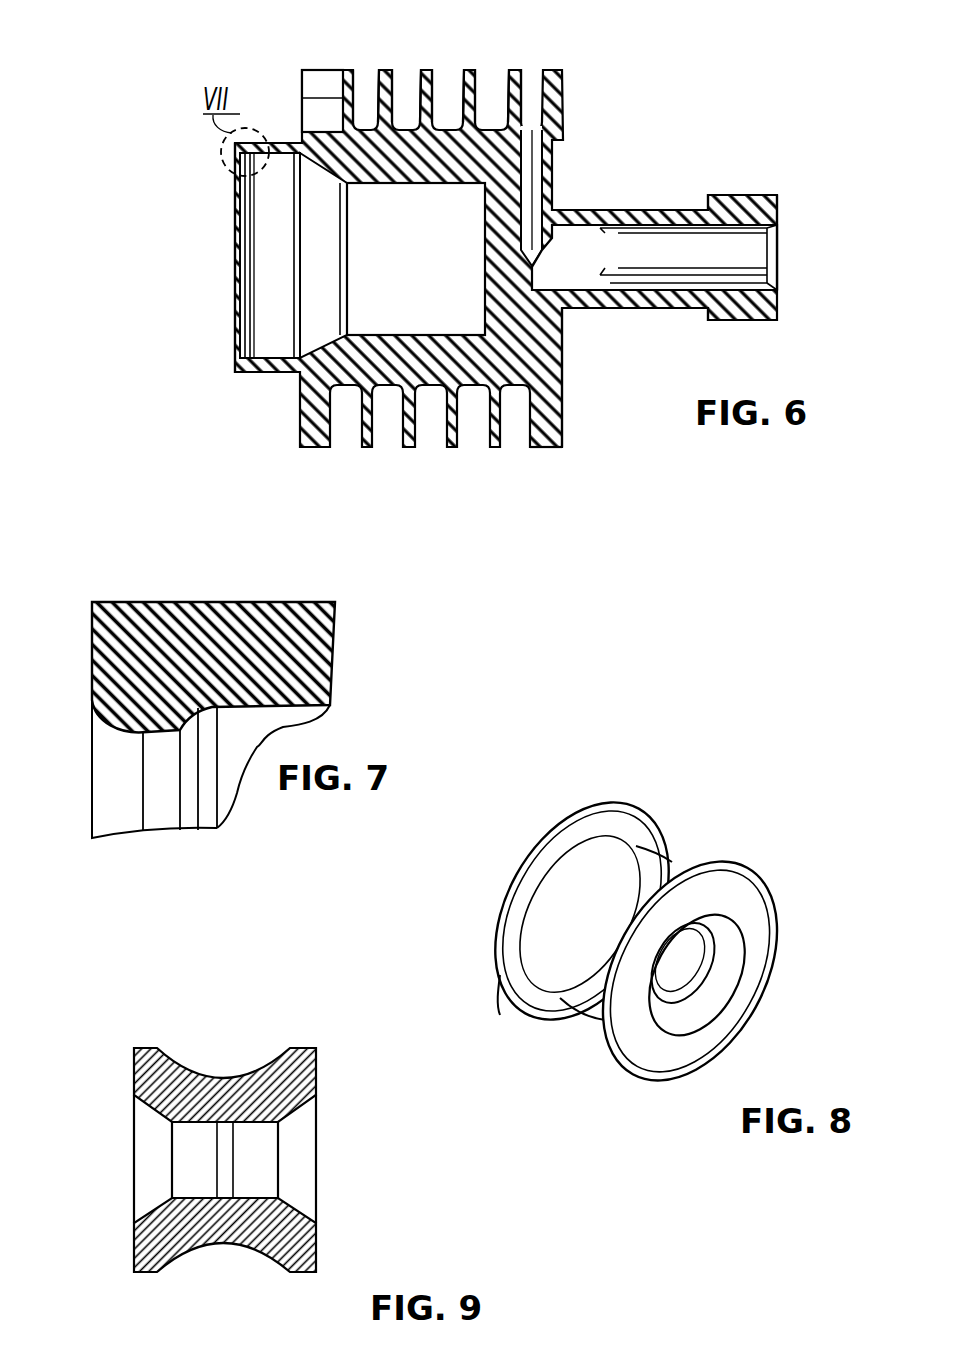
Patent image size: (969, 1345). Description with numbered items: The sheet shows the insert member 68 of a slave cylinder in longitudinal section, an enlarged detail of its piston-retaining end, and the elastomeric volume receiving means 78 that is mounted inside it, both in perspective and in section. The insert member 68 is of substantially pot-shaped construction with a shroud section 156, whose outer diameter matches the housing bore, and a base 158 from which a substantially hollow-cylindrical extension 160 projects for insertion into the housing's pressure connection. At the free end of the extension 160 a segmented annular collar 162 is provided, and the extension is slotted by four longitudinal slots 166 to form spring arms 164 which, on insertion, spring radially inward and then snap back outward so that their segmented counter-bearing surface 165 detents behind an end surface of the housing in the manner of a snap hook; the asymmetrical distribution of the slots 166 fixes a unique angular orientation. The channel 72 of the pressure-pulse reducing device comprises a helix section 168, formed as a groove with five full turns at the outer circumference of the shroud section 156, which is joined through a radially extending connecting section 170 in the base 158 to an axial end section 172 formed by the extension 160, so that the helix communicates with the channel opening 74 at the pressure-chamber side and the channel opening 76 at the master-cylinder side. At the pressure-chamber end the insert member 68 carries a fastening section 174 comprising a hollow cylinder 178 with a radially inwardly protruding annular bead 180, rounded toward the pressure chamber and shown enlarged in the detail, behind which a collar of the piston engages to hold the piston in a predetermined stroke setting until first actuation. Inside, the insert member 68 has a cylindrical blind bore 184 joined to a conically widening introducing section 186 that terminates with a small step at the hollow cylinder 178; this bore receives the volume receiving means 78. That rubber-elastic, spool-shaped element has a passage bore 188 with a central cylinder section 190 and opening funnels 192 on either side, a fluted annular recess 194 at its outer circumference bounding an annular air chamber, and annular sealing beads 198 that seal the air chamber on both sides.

In FIG. 6, the insert member 68 is at (599, 163).
In FIG. 6, the channel 72 is at (412, 98).
In FIG. 6, the channel opening 74 is at (305, 100).
In FIG. 6, the channel opening 76 is at (818, 213).
In FIG. 8, the volume receiving means 78 is at (641, 939).
In FIG. 9, the volume receiving means 78 is at (220, 1141).
In FIG. 6, the shroud section 156 is at (548, 447).
In FIG. 6, the base 158 is at (568, 335).
In FIG. 6, the extension 160 is at (613, 206).
In FIG. 6, the annular collar 162 is at (730, 195).
In FIG. 6, the spring arms 164 is at (785, 203).
In FIG. 6, the counter-bearing surface 165 is at (700, 308).
In FIG. 6, the slots 166 is at (690, 285).
In FIG. 6, the helix section 168 is at (480, 97).
In FIG. 6, the connecting section 170 is at (545, 167).
In FIG. 6, the end section 172 is at (604, 274).
In FIG. 6, the fastening section 174 is at (245, 375).
In FIG. 7, the fastening section 174 is at (192, 596).
In FIG. 6, the hollow cylinder 178 is at (292, 291).
In FIG. 7, the hollow cylinder 178 is at (130, 640).
In FIG. 6, the annular bead 180 is at (246, 306).
In FIG. 7, the annular bead 180 is at (158, 735).
In FIG. 6, the blind bore 184 is at (420, 231).
In FIG. 6, the introducing section 186 is at (314, 313).
In FIG. 8, the passage bore 188 is at (688, 961).
In FIG. 9, the passage bore 188 is at (195, 1143).
In FIG. 8, the cylinder section 190 is at (715, 985).
In FIG. 9, the cylinder section 190 is at (214, 1186).
In FIG. 8, the opening funnels 192 is at (725, 941).
In FIG. 9, the opening funnels 192 is at (155, 1168).
In FIG. 8, the annular recess 194 is at (617, 921).
In FIG. 9, the annular recess 194 is at (222, 1076).
In FIG. 8, the sealing beads 198 is at (607, 1043).
In FIG. 9, the sealing beads 198 is at (290, 1275).